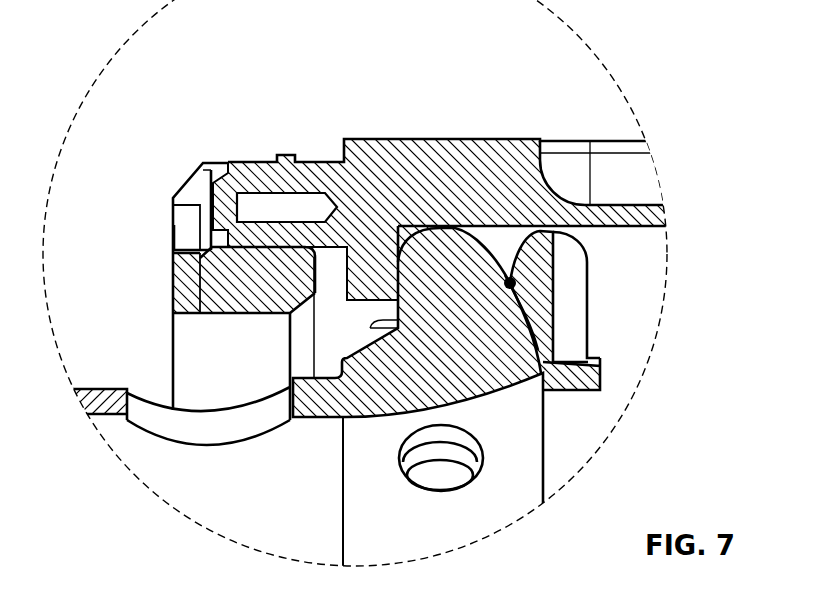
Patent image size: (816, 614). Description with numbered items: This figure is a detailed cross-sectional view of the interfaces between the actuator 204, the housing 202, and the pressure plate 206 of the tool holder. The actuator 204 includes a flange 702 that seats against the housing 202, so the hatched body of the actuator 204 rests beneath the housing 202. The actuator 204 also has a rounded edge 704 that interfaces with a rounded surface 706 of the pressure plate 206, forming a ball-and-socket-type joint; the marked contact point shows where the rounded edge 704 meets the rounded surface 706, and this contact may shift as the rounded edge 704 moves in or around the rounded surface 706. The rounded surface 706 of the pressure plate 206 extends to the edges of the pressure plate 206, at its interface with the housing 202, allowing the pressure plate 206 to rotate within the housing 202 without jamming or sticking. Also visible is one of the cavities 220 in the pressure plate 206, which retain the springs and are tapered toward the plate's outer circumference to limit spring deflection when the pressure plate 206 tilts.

The housing 202 is at (389, 191).
The actuator 204 is at (423, 359).
The pressure plate 206 is at (549, 436).
The cavities 220 is at (577, 288).
The flange 702 is at (456, 228).
The rounded edge 704 is at (497, 268).
The rounded surface 706 is at (510, 283).